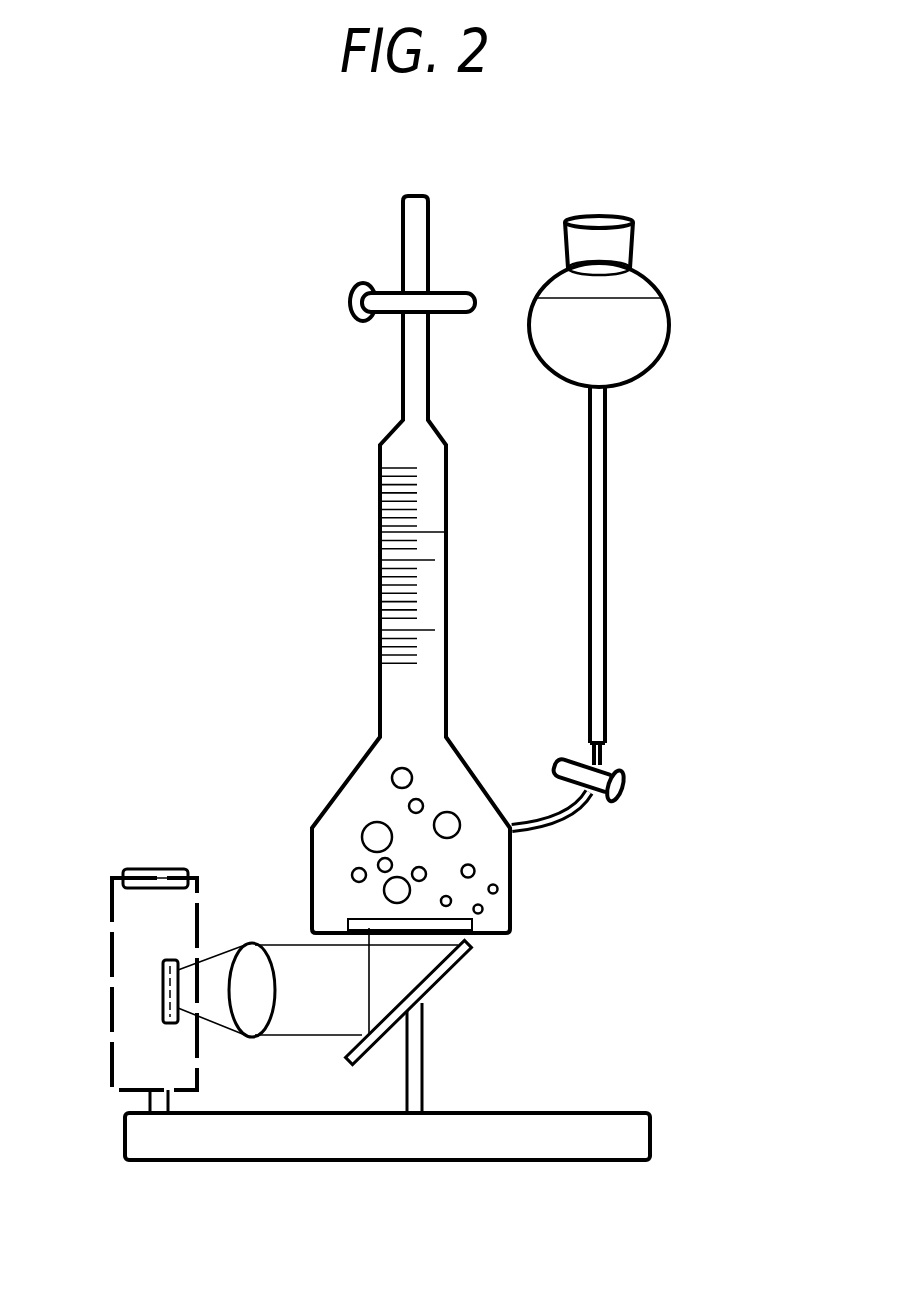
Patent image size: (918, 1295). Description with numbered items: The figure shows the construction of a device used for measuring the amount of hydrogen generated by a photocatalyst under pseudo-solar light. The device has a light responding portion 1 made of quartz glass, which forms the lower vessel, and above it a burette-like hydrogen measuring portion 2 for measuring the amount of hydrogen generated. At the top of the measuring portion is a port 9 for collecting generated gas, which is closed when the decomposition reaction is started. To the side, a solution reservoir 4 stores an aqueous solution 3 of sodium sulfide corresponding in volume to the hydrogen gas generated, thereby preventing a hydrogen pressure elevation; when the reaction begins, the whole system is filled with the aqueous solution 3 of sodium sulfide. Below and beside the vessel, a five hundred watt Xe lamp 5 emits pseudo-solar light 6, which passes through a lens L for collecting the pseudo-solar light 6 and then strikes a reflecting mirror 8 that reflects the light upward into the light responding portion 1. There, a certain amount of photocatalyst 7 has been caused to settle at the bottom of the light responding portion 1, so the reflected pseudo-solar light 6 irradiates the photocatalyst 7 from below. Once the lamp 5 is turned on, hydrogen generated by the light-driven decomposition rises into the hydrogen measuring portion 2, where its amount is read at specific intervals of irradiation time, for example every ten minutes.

The light responding portion 1 is at (541, 862).
The hydrogen measuring portion 2 is at (352, 469).
The aqueous solution of sodium sulfide 3 is at (345, 784).
The solution reservoir 4 is at (693, 313).
The 500 W Xe lamp 5 is at (112, 983).
The pseudo-solar light 6 is at (215, 1007).
The photocatalyst 7 is at (512, 907).
The reflecting mirror 8 is at (441, 985).
The port for collecting generated gas 9 is at (350, 300).
The lens L is at (250, 940).